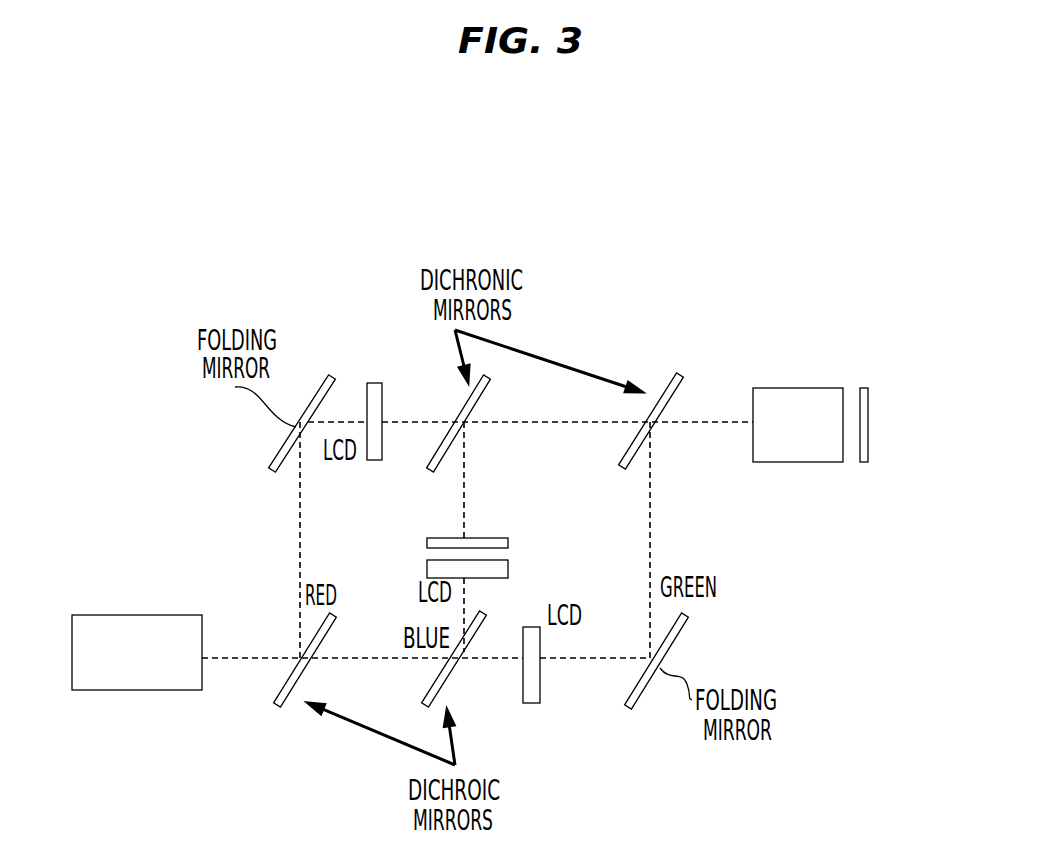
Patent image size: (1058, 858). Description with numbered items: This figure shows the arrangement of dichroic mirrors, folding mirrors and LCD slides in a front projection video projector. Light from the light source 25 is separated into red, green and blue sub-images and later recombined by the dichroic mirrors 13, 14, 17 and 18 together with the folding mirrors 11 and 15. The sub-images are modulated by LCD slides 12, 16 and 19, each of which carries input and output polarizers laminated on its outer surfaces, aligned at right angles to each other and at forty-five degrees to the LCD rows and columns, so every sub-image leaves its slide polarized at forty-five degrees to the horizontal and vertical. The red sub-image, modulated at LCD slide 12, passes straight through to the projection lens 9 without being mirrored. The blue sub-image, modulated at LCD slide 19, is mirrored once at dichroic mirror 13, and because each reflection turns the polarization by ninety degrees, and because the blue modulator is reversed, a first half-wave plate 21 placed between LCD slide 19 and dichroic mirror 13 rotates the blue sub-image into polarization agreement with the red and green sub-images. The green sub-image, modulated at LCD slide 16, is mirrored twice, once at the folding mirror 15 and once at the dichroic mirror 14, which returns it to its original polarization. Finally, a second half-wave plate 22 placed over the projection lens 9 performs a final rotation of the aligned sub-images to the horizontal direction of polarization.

The projection lens 9 is at (802, 388).
The folding mirror 11 is at (302, 422).
The LCD slide 12 is at (382, 397).
The dichroic mirror 13 is at (480, 394).
The dichroic mirror 14 is at (670, 392).
The folding mirror 15 is at (675, 644).
The LCD slide 16 is at (540, 682).
The dichroic mirror 17 is at (443, 682).
The dichroic mirror 18 is at (307, 667).
The LCD slide 19 is at (427, 570).
The first half-wave plate 21 is at (483, 538).
The second half-wave plate 22 is at (868, 440).
The light source 25 is at (93, 615).